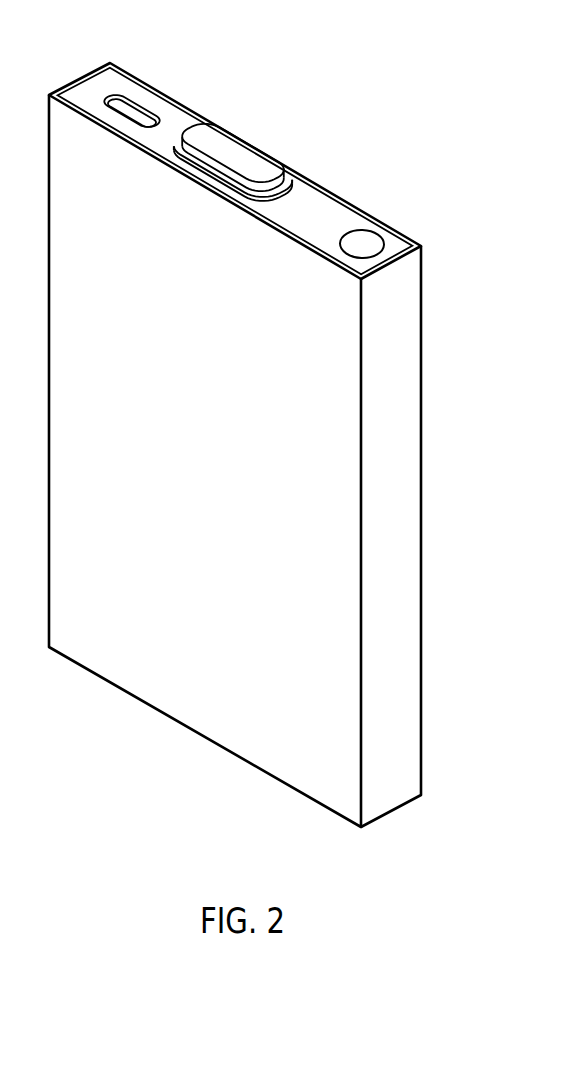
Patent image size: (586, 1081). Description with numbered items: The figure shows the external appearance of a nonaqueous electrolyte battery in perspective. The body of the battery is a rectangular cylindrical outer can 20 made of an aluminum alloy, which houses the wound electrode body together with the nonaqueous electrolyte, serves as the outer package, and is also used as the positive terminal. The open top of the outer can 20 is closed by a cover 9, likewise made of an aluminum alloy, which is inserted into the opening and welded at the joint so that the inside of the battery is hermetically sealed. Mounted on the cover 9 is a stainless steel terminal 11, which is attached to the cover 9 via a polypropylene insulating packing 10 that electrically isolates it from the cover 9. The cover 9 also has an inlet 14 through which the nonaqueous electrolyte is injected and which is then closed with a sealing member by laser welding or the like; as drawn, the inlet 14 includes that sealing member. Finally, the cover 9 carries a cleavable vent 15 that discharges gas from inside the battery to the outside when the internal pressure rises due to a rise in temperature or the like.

The cover 9 is at (177, 123).
The insulating packing 10 is at (276, 188).
The terminal 11 is at (240, 152).
The inlet 14 is at (362, 244).
The cleavable vent 15 is at (130, 110).
The outer can 20 is at (408, 480).